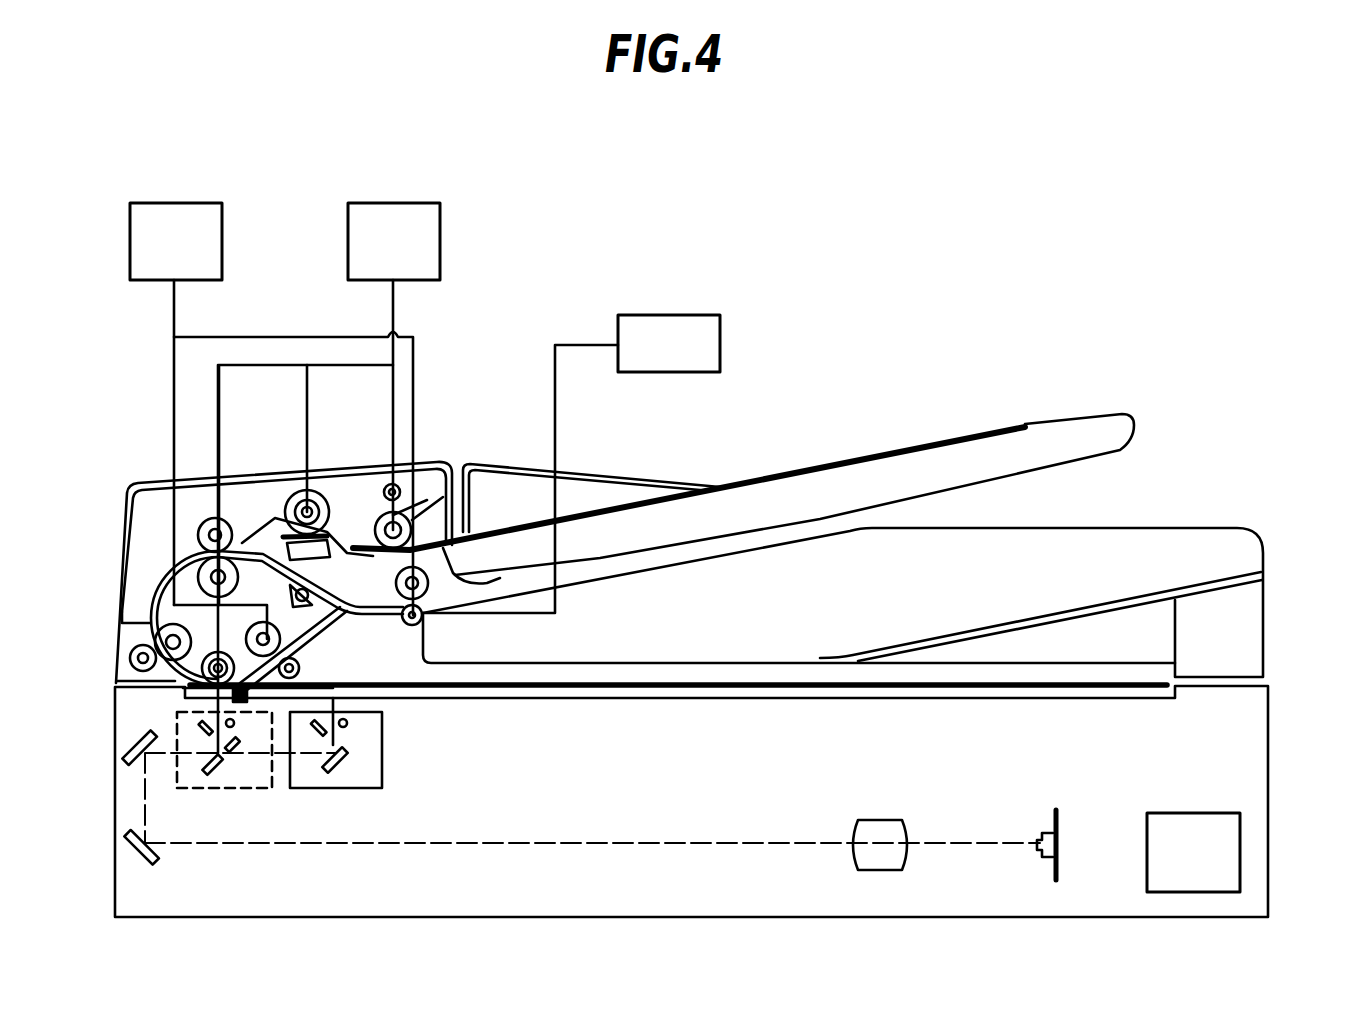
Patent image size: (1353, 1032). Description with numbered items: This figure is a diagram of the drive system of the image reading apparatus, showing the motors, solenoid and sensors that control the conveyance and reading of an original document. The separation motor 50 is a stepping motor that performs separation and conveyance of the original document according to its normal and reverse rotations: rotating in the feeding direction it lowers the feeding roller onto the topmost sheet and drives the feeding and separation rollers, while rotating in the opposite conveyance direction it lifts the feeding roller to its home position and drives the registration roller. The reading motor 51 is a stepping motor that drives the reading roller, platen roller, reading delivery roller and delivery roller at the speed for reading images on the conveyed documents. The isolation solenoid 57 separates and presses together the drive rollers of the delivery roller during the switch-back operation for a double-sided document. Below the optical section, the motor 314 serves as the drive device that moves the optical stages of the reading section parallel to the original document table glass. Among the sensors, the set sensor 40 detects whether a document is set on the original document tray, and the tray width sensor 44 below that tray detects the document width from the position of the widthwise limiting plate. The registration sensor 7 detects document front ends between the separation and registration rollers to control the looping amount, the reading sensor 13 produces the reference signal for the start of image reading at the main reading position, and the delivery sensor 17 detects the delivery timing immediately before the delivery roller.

The registration sensor 7 is at (243, 524).
The reading sensor 13 is at (115, 704).
The delivery sensor 17 is at (379, 622).
The set sensor 40 is at (352, 513).
The tray width sensor 44 is at (602, 541).
The separation motor 50 is at (440, 250).
The reading motor 51 is at (222, 247).
The isolation solenoid 57 is at (720, 344).
The motor 314 is at (1212, 879).